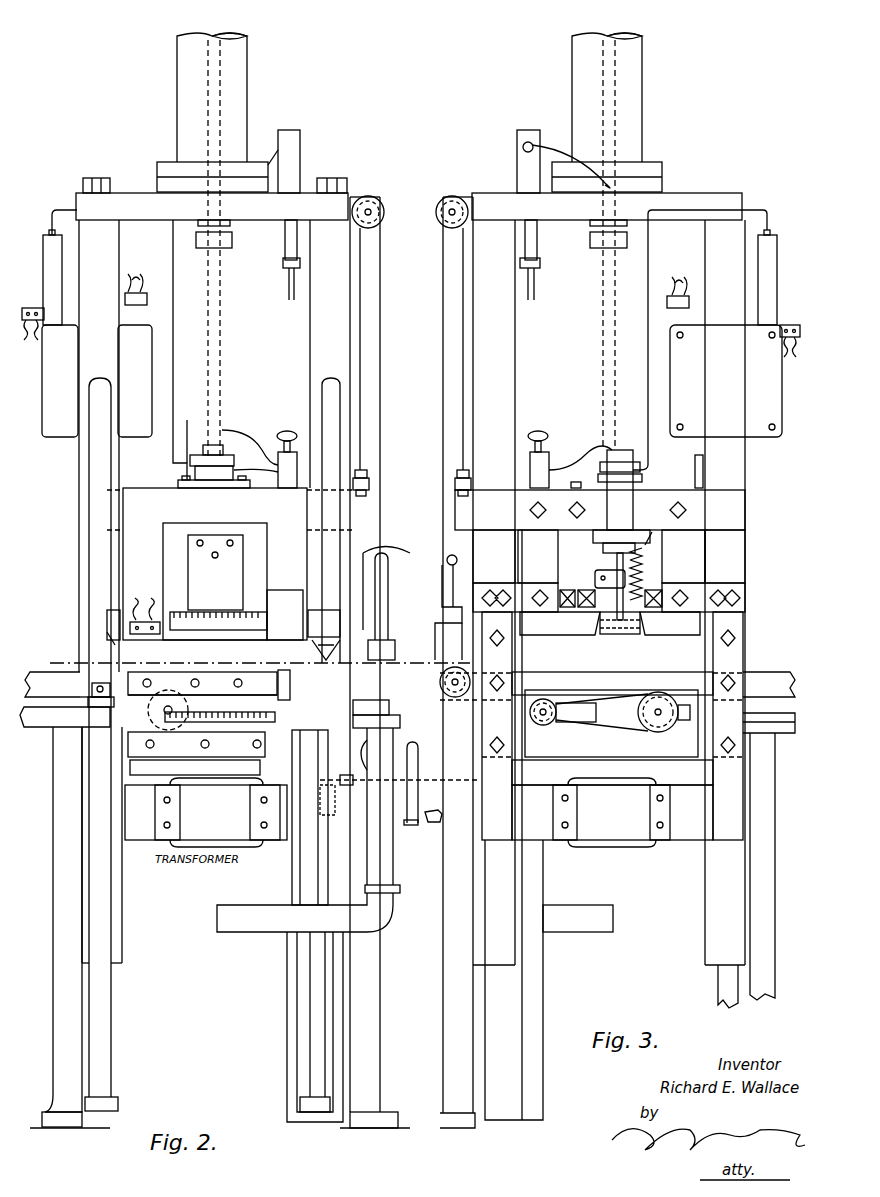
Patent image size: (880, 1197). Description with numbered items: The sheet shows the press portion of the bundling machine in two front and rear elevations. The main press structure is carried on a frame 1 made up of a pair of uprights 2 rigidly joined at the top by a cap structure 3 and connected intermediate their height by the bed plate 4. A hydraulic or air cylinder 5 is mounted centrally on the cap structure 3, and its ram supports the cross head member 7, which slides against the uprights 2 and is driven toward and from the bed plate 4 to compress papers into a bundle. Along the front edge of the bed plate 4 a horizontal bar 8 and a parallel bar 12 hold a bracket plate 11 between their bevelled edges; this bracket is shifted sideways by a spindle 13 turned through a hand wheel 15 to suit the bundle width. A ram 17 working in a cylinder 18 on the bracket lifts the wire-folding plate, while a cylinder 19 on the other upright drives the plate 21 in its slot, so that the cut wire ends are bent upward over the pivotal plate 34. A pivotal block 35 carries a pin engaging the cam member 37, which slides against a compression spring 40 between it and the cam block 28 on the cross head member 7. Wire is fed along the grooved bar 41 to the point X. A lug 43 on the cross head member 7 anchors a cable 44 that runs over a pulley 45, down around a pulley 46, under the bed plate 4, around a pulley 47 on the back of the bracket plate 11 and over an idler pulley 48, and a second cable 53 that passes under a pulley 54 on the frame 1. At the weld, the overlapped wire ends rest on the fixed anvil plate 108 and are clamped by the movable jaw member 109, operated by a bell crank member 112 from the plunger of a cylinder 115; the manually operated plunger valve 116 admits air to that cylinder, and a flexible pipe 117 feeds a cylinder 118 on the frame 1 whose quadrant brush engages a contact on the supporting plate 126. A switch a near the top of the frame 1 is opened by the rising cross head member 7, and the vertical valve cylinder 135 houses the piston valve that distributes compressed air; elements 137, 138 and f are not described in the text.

In FIG. 2, the frame 1 is at (352, 318).
In FIG. 3, the frame 1 is at (746, 477).
In FIG. 2, the uprights 2 is at (312, 348).
In FIG. 3, the uprights 2 is at (497, 330).
In FIG. 2, the cap structure 3 is at (140, 208).
In FIG. 3, the cap structure 3 is at (688, 208).
In FIG. 3, the bed plate 4 is at (572, 680).
In FIG. 2, the hydraulic or air cylinder 5 is at (414, 672).
In FIG. 2, the cross head member 7 is at (230, 564).
In FIG. 3, the cross head member 7 is at (684, 630).
In FIG. 2, the horizontal bar 8 is at (182, 678).
In FIG. 2, the bracket plate 11 is at (200, 757).
In FIG. 2, the bar 12 is at (227, 750).
In FIG. 2, the spindle 13 is at (347, 785).
In FIG. 2, the hand wheel 15 is at (412, 825).
In FIG. 2, the piston or ram 17 is at (310, 817).
In FIG. 2, the cylinder 18 is at (305, 1024).
In FIG. 2, the cylinder 19 is at (108, 1008).
In FIG. 2, the plate 21 is at (92, 697).
In FIG. 2, the cam block 28 is at (108, 634).
In FIG. 2, the pivotal plate 34 is at (284, 670).
In FIG. 2, the pivotal block 35 is at (300, 660).
In FIG. 2, the cam member 37 is at (325, 610).
In FIG. 2, the compression spring 40 is at (202, 669).
In FIG. 2, the grooved bar 41 is at (418, 670).
In FIG. 2, the lug 43 is at (368, 495).
In FIG. 3, the lug 43 is at (462, 500).
In FIG. 2, the cable 44 is at (362, 358).
In FIG. 3, the cable 44 is at (460, 405).
In FIG. 2, the pulley 45 is at (382, 200).
In FIG. 3, the pulley 45 is at (442, 200).
In FIG. 2, the pulley 46 is at (452, 700).
In FIG. 2, the pulley 47 is at (195, 707).
In FIG. 3, the pulley 47 is at (658, 728).
In FIG. 3, the idler pulley 48 is at (548, 725).
In FIG. 2, the cable 53 is at (391, 584).
In FIG. 2, the pulley 54 is at (369, 762).
In FIG. 3, the fixed anvil plate 108 is at (642, 634).
In FIG. 3, the movable jaw member 109 is at (618, 634).
In FIG. 3, the bell crank member 112 is at (595, 588).
In FIG. 2, the cylinder 115 is at (195, 455).
In FIG. 3, the cylinder 115 is at (621, 501).
In FIG. 2, the manually operated plunger valve 116 is at (278, 452).
In FIG. 3, the manually operated plunger valve 116 is at (545, 452).
In FIG. 2, the flexible pipe 117 is at (177, 322).
In FIG. 3, the flexible pipe 117 is at (648, 363).
In FIG. 2, the cylinder 118 is at (48, 250).
In FIG. 3, the cylinder 118 is at (776, 240).
In FIG. 2, the supporting plate 126 is at (60, 437).
In FIG. 3, the supporting plate 126 is at (735, 381).
In FIG. 2, the valve cylinder 135 is at (382, 884).
In FIG. 2, the rod 137 is at (388, 562).
In FIG. 2, the rod 138 is at (445, 610).
In FIG. 2, the switch a is at (145, 297).
In FIG. 3, the switch a is at (667, 302).
In FIG. 2, the contact f is at (142, 640).
In FIG. 2, the point X is at (234, 640).
In FIG. 3, the point X is at (620, 652).